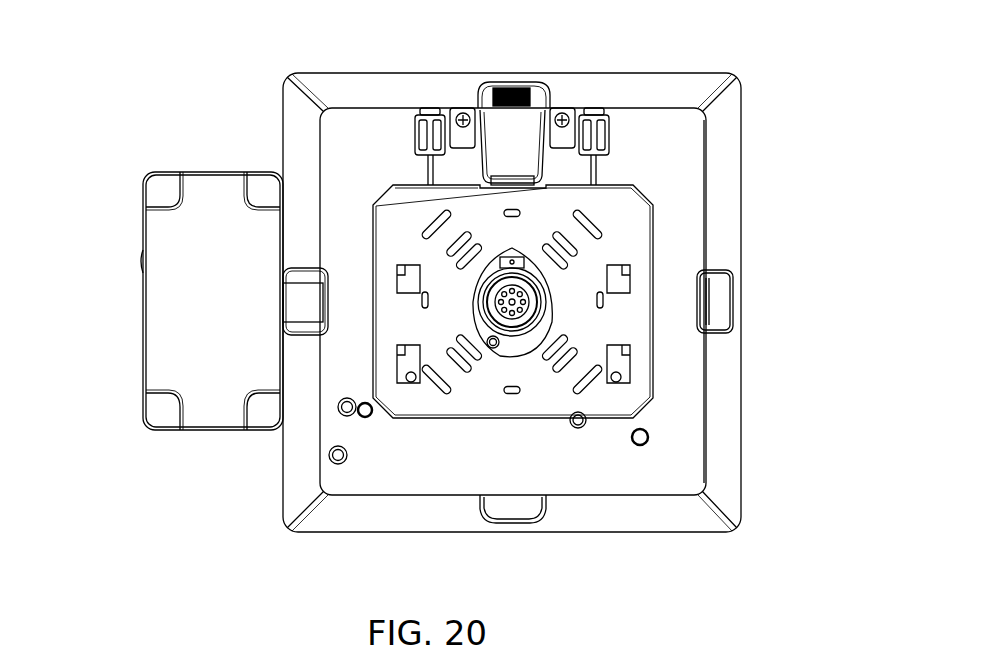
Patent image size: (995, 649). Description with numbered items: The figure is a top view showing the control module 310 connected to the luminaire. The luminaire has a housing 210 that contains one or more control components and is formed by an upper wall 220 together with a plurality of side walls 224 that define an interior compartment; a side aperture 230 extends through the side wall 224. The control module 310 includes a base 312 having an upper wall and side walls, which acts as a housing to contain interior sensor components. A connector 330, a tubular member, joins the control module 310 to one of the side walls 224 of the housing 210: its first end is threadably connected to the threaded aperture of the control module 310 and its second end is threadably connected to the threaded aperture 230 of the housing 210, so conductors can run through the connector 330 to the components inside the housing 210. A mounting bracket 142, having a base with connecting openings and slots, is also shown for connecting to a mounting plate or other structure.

The housing 210 is at (737, 56).
The side wall 224 is at (737, 202).
The side aperture 230 is at (697, 262).
The mounting bracket 142 is at (620, 298).
The upper wall 220 is at (687, 407).
The control module 310 is at (177, 241).
The base 312 is at (168, 313).
The connector 330 is at (310, 290).